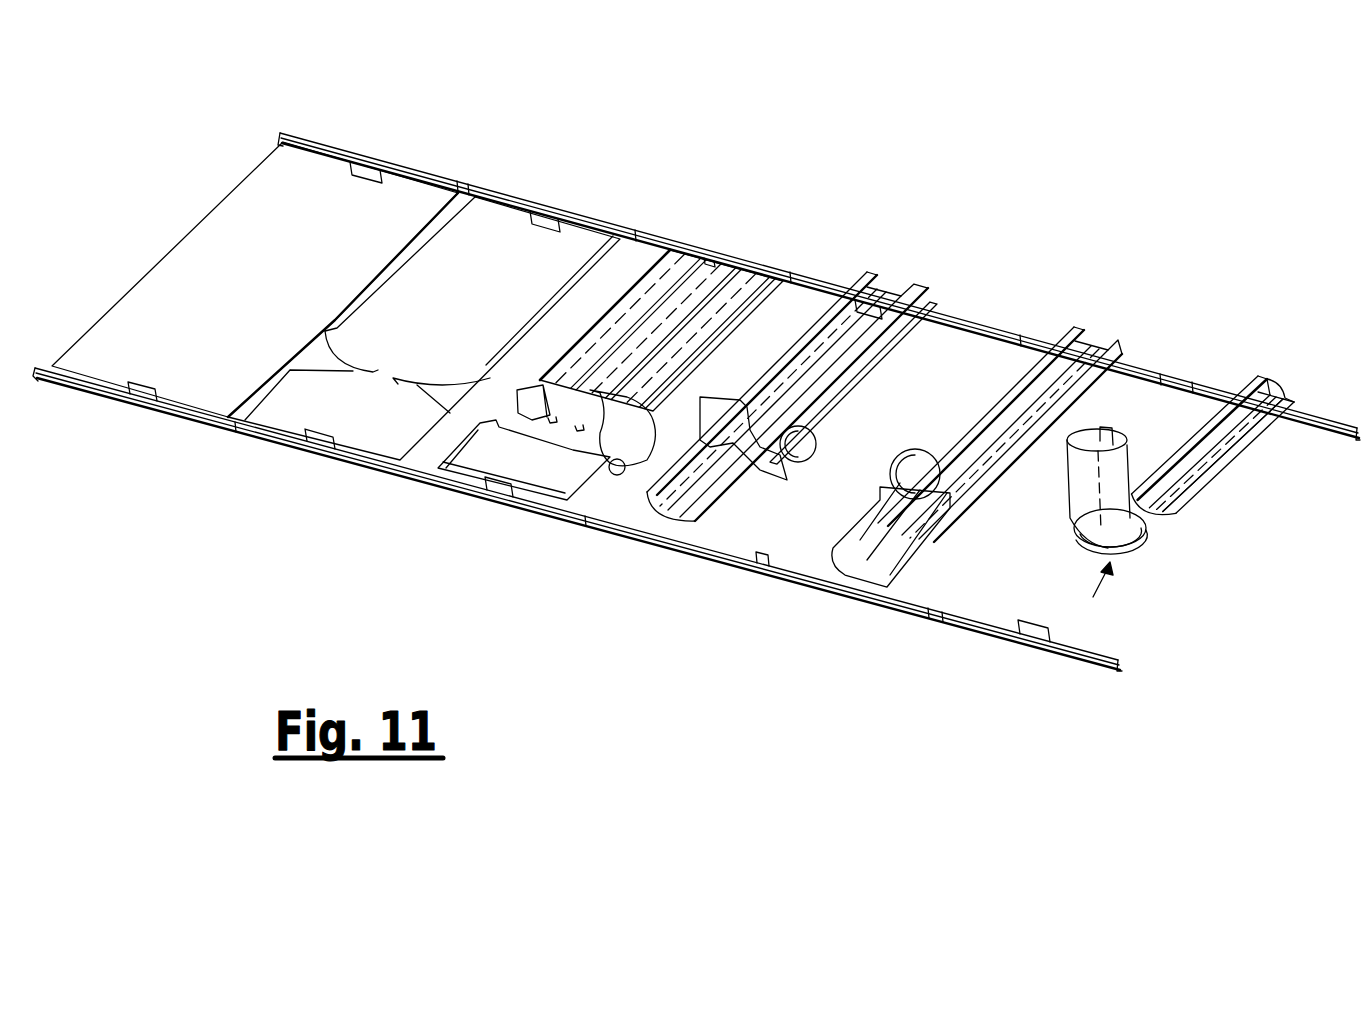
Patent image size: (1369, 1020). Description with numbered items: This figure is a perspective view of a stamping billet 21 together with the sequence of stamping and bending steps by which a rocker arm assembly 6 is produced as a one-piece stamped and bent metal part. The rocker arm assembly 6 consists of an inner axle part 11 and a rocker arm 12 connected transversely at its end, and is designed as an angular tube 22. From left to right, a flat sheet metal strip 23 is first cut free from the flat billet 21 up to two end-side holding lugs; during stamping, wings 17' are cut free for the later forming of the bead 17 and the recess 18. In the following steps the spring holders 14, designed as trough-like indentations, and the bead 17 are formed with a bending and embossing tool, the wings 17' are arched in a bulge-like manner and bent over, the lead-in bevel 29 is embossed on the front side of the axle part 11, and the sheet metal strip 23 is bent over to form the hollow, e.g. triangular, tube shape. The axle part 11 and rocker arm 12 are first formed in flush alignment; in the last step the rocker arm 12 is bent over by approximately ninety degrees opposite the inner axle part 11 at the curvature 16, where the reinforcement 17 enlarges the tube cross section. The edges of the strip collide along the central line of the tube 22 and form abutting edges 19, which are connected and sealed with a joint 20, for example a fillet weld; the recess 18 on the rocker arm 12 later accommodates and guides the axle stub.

The rocker arm assembly 6 is at (1193, 503).
The inner axle part 11 is at (963, 390).
The rocker arm 12 is at (856, 530).
The spring holders 14 is at (950, 305).
The curvature or angular deflection 16 is at (1094, 595).
The reinforcement (bead) 17 is at (1134, 573).
The wings 17' is at (563, 449).
The recess 18 is at (1104, 436).
The abutting edges (junction) 19 is at (1062, 330).
The joint (weld seam) 20 is at (1222, 394).
The stamping billet 21 is at (380, 159).
The angular tube 22 is at (1223, 445).
The sheet metal strip 23 is at (262, 240).
The lead-in bevel 29 is at (1280, 398).